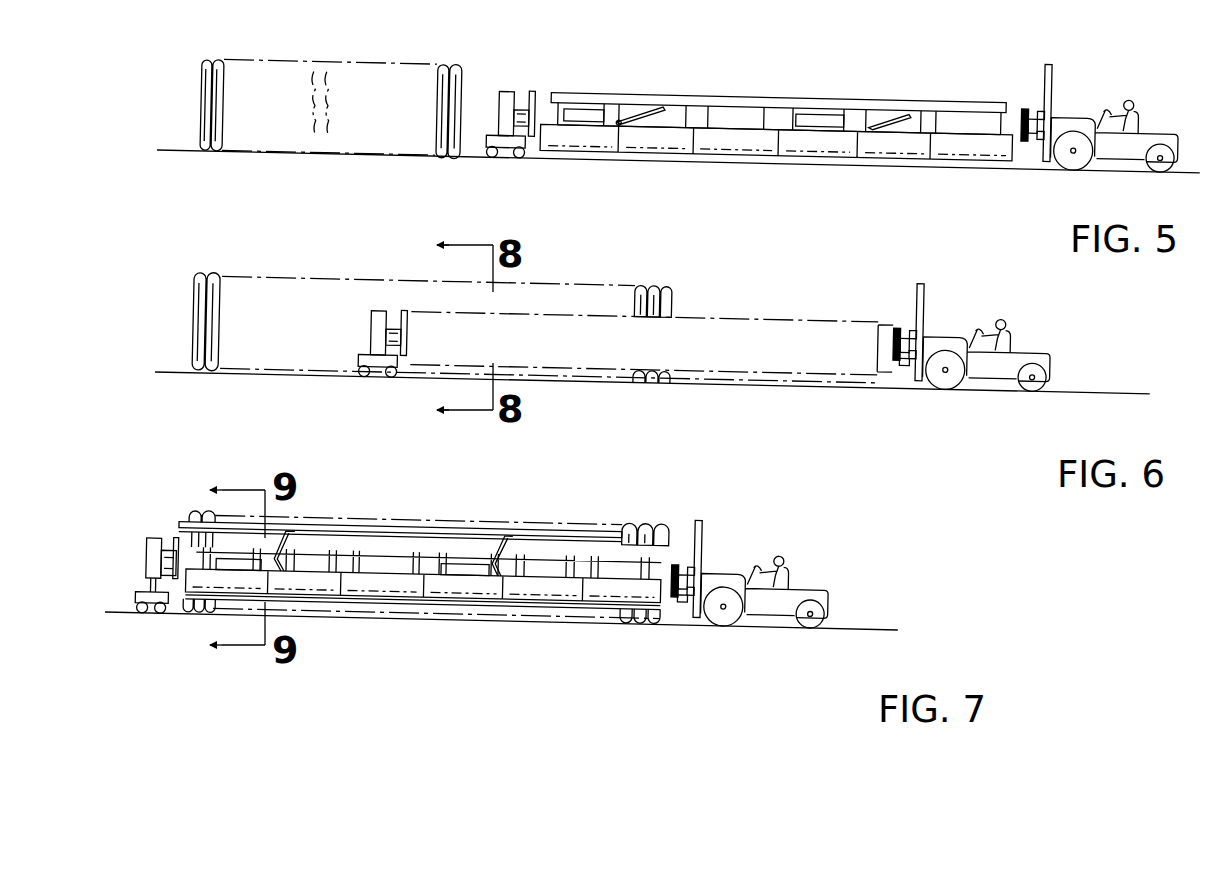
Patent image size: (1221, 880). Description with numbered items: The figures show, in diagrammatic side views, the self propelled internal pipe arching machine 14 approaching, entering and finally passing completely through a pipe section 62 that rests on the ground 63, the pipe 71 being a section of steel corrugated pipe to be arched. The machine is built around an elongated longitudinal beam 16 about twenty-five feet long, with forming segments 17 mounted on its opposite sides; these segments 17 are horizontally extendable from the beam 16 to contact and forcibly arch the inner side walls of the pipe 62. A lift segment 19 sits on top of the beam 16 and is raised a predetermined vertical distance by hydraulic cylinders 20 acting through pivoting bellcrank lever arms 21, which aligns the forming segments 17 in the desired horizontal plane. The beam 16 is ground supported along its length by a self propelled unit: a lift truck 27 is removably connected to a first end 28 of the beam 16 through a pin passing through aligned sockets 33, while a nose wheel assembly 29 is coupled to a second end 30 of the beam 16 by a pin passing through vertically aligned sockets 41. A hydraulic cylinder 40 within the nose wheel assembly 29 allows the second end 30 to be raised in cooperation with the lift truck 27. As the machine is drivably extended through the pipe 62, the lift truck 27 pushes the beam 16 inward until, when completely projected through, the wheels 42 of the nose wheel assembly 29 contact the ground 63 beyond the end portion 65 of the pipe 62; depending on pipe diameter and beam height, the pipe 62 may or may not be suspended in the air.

In FIG. 5, the self propelled internal pipe arching machine 14 is at (1096, 32).
In FIG. 6, the self propelled internal pipe arching machine 14 is at (884, 250).
In FIG. 7, the self propelled internal pipe arching machine 14 is at (702, 486).
In FIG. 5, the beam 16 is at (742, 108).
In FIG. 7, the beam 16 is at (611, 558).
In FIG. 5, the forming segments 17 is at (716, 131).
In FIG. 7, the forming segments 17 is at (366, 586).
In FIG. 5, the lift segment 19 is at (917, 84).
In FIG. 7, the lift segment 19 is at (477, 520).
In FIG. 5, the hydraulic cylinders 20 is at (585, 108).
In FIG. 7, the hydraulic cylinders 20 is at (237, 560).
In FIG. 5, the bellcrank lever arms 21 is at (653, 90).
In FIG. 7, the bellcrank lever arms 21 is at (290, 526).
In FIG. 5, the lift truck 27 is at (1174, 110).
In FIG. 6, the lift truck 27 is at (1053, 335).
In FIG. 7, the lift truck 27 is at (822, 572).
In FIG. 5, the first end 28 is at (1024, 91).
In FIG. 6, the first end 28 is at (901, 313).
In FIG. 7, the first end 28 is at (677, 541).
In FIG. 5, the nose wheel assembly 29 is at (487, 112).
In FIG. 6, the nose wheel assembly 29 is at (359, 346).
In FIG. 7, the nose wheel assembly 29 is at (127, 577).
In FIG. 5, the second end 30 is at (537, 84).
In FIG. 6, the second end 30 is at (407, 306).
In FIG. 7, the second end 30 is at (172, 533).
In FIG. 6, the sockets 33 is at (905, 350).
In FIG. 7, the sockets 33 is at (683, 611).
In FIG. 7, the hydraulic cylinder 40 is at (148, 586).
In FIG. 5, the sockets 41 is at (522, 101).
In FIG. 6, the sockets 41 is at (396, 322).
In FIG. 7, the sockets 41 is at (163, 540).
In FIG. 5, the wheels 42 is at (512, 150).
In FIG. 6, the wheels 42 is at (381, 368).
In FIG. 7, the wheels 42 is at (152, 612).
In FIG. 5, the pipe section 62 is at (453, 59).
In FIG. 6, the pipe section 62 is at (641, 276).
In FIG. 7, the pipe section 62 is at (646, 513).
In FIG. 5, the ground 63 is at (1052, 156).
In FIG. 6, the ground 63 is at (1063, 375).
In FIG. 7, the ground 63 is at (841, 616).
In FIG. 5, the end portion 65 is at (199, 86).
In FIG. 6, the end portion 65 is at (192, 295).
In FIG. 7, the end portion 65 is at (186, 607).
In FIG. 5, the pipe 71 is at (200, 110).
In FIG. 6, the pipe 71 is at (192, 327).
In FIG. 7, the pipe 71 is at (206, 509).